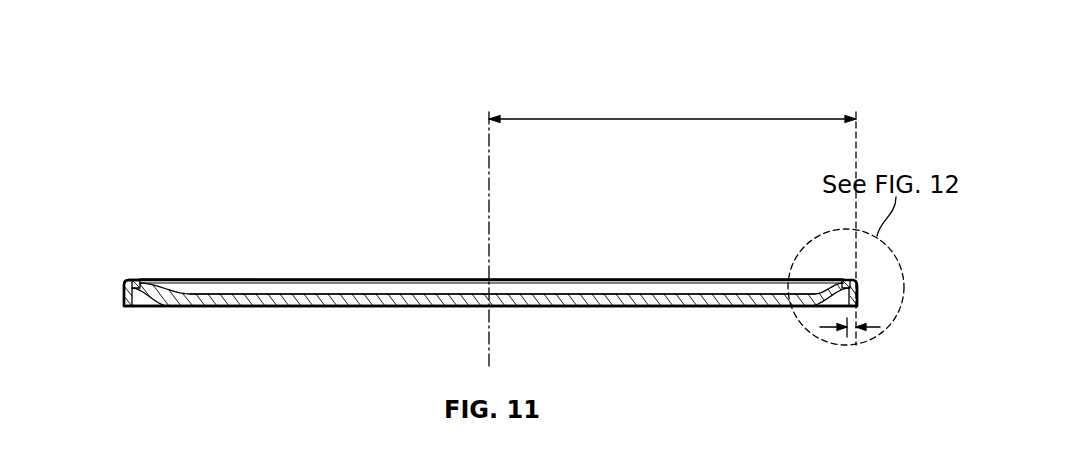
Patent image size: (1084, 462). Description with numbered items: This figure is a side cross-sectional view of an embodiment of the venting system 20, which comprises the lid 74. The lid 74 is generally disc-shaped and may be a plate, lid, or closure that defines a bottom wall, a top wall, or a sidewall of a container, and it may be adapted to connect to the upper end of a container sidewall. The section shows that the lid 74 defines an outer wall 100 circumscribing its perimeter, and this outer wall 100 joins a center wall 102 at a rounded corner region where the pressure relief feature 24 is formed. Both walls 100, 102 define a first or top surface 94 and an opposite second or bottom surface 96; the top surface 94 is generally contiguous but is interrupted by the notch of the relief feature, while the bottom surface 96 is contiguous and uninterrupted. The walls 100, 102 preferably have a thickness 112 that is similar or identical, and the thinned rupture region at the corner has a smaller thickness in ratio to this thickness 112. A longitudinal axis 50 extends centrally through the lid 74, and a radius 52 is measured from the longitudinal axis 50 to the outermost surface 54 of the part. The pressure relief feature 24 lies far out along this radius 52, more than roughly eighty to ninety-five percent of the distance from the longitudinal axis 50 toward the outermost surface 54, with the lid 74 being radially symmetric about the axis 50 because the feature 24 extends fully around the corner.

The venting system 20 is at (499, 208).
The pressure relief feature 24 is at (117, 268).
The longitudinal axis 50 is at (489, 200).
The radius 52 is at (672, 118).
The outermost surface 54 is at (858, 293).
The lid 74 is at (355, 279).
The top surface 94 is at (598, 293).
The bottom surface 96 is at (678, 307).
The outer wall 100 is at (124, 298).
The center wall 102 is at (397, 293).
The thickness 112 is at (876, 329).